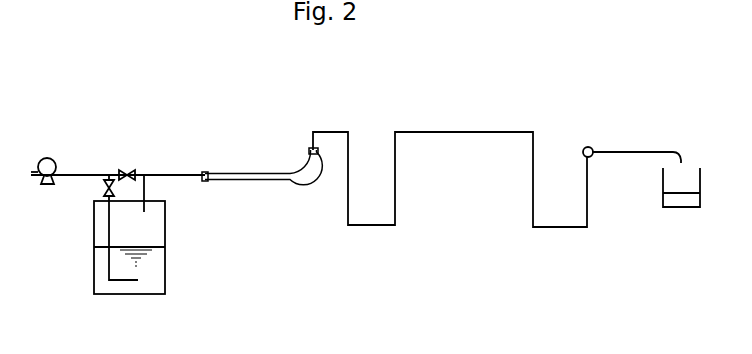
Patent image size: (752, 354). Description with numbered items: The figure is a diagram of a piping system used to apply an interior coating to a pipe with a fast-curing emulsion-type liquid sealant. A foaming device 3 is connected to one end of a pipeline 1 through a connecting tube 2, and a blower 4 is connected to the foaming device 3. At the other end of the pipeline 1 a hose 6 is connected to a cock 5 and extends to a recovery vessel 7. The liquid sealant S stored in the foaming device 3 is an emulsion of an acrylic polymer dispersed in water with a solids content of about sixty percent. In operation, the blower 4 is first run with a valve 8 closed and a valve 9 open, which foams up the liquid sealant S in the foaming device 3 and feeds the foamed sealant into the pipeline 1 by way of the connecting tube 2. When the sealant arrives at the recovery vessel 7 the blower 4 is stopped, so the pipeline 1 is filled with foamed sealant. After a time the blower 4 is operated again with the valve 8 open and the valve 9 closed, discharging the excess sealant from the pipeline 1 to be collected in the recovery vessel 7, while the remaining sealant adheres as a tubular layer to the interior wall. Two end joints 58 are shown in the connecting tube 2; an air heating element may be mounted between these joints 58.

The pipeline 1 is at (461, 132).
The connecting tube 2 is at (273, 180).
The foaming device 3 is at (165, 246).
The blower 4 is at (47, 158).
The cock 5 is at (584, 148).
The hose 6 is at (631, 152).
The recovery vessel 7 is at (683, 208).
The valve 8 is at (127, 170).
The valve 9 is at (105, 186).
The end joint 58 is at (205, 172).
The liquid sealant S is at (152, 282).